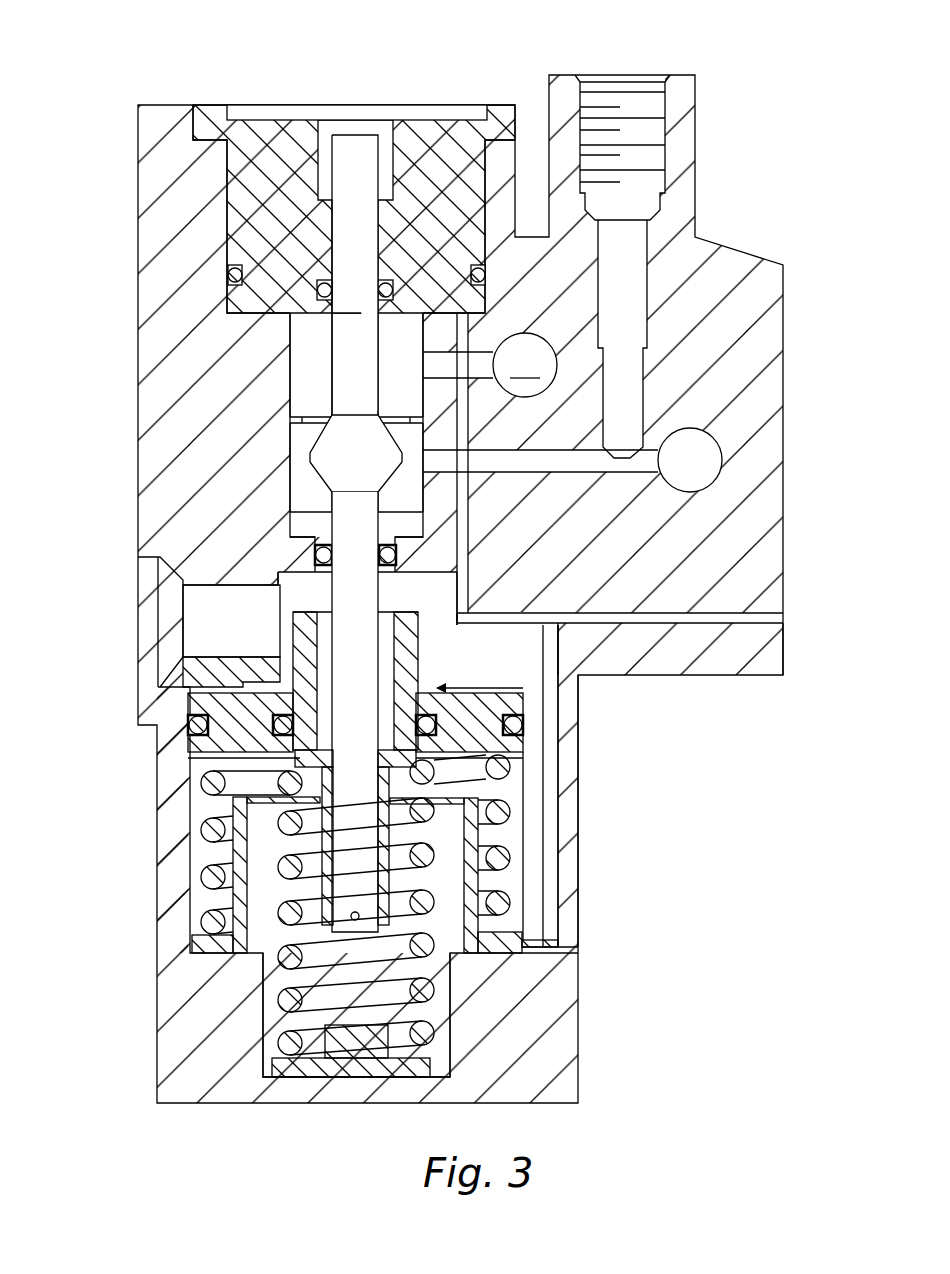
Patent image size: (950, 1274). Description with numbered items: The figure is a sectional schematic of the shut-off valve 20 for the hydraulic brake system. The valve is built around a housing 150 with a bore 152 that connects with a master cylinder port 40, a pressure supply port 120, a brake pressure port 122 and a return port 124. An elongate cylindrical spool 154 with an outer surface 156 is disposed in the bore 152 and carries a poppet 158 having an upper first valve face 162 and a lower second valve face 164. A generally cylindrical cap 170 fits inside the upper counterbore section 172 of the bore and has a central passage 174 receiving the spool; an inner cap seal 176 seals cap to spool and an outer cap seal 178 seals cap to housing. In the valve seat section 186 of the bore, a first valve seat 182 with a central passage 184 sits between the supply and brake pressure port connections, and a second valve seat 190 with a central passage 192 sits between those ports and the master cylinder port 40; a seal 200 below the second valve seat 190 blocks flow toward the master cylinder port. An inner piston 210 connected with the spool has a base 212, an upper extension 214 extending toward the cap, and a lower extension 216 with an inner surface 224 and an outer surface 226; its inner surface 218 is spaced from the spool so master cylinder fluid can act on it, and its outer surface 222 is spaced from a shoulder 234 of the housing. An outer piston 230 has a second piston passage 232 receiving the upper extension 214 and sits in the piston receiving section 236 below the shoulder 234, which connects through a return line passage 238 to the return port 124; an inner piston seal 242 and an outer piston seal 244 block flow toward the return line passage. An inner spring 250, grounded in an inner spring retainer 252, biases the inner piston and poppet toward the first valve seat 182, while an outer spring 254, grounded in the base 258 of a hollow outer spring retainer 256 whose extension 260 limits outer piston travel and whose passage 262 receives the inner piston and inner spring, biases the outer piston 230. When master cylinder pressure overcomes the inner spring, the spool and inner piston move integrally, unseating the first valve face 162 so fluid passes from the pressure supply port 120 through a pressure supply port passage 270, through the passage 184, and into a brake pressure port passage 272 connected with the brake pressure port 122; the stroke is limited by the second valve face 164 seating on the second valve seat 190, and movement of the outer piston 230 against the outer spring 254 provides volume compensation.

The shut-off valve 20 is at (735, 68).
The master cylinder port 40 is at (150, 665).
The pressure supply port 120 is at (525, 365).
The brake pressure port 122 is at (630, 292).
The return port 124 is at (770, 618).
The housing 150 is at (725, 372).
The bore 152 is at (310, 368).
The spool 154 is at (355, 340).
The outer surface 156 is at (330, 330).
The poppet 158 is at (300, 457).
The first valve face 162 is at (318, 428).
The second valve face 164 is at (317, 498).
The cap 170 is at (442, 165).
The upper counterbore section 172 is at (232, 160).
The central passage 174 is at (336, 222).
The inner cap seal 176 is at (230, 278).
The outer cap seal 178 is at (233, 327).
The first valve seat 182 is at (305, 408).
The central passage 184 is at (380, 392).
The valve seat section 186 is at (303, 522).
The second valve seat 190 is at (318, 553).
The central passage 192 is at (405, 500).
The seal 200 is at (282, 577).
The inner piston 210 is at (472, 720).
The base 212 is at (470, 770).
The upper extension 214 is at (410, 660).
The lower extension 216 is at (475, 830).
The inner surface 218 is at (458, 616).
The outer surface 222 is at (162, 585).
The inner surface 224 is at (440, 860).
The outer surface 226 is at (480, 900).
The outer piston 230 is at (505, 742).
The second piston passage 232 is at (318, 700).
The shoulder 234 is at (205, 697).
The piston receiving section 236 is at (205, 877).
The return line passage 238 is at (552, 928).
The inner piston seal 242 is at (290, 758).
The outer piston seal 244 is at (195, 725).
The inner spring 250 is at (490, 1060).
The inner spring retainer 252 is at (300, 1062).
The outer spring 254 is at (250, 925).
The outer spring retainer 256 is at (230, 850).
The base 258 is at (210, 945).
The extension 260 is at (465, 790).
The passage 262 is at (278, 1043).
The pressure supply port passage 270 is at (480, 352).
The brake pressure port passage 272 is at (562, 470).